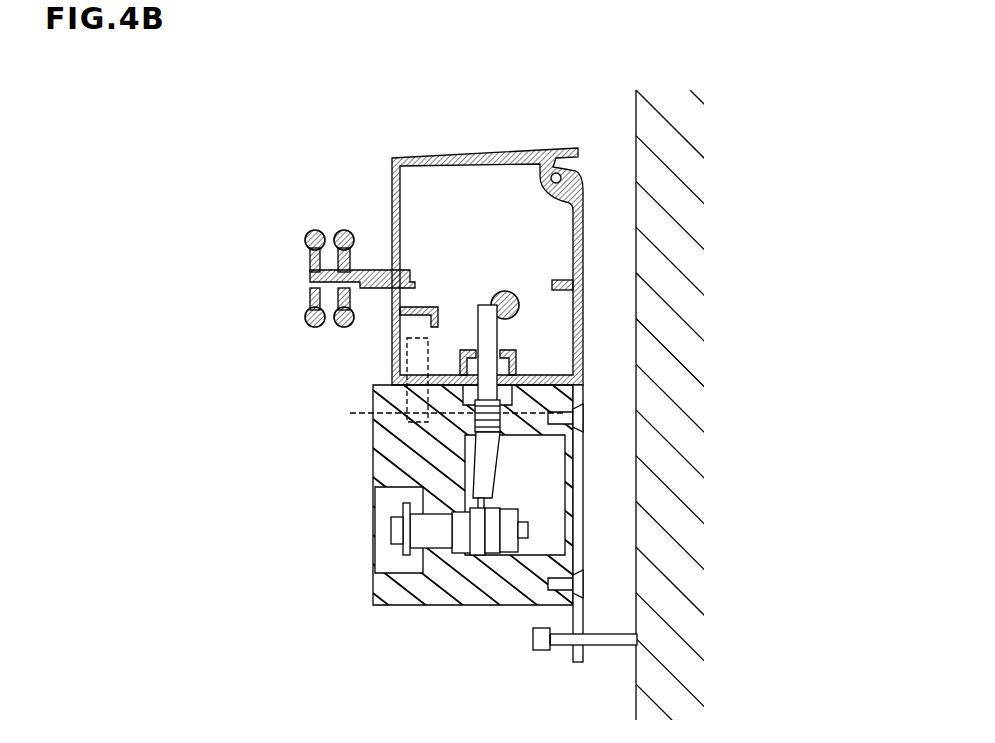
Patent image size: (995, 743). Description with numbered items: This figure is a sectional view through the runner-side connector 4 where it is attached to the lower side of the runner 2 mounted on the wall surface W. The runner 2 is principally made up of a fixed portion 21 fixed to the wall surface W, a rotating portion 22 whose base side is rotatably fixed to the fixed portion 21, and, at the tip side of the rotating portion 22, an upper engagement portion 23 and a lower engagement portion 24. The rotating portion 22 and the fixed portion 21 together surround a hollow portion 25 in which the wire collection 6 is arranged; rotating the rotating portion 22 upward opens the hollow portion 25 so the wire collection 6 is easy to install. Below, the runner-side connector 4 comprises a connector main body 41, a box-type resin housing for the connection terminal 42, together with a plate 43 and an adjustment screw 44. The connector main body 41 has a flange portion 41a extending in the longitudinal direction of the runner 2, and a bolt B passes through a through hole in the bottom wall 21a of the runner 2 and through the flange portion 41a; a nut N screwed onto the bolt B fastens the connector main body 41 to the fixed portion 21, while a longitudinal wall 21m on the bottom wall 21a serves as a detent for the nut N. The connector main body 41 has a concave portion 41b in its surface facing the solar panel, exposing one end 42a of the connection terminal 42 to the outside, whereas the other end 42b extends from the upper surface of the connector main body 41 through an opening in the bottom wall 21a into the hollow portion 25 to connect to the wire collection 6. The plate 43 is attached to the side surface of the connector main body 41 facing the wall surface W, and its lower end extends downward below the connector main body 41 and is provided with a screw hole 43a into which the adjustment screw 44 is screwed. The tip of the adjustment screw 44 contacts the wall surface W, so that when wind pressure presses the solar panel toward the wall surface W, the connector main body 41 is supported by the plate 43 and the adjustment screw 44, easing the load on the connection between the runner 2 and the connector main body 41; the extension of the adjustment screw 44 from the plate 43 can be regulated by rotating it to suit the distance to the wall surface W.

The runner 2 is at (491, 230).
The rotating portion 22 is at (486, 148).
The wall surface W is at (636, 105).
The hollow portion 25 is at (441, 214).
The other end of connection terminal 42b is at (486, 305).
The wire collection 6 is at (512, 293).
The fixed portion 21 is at (590, 248).
The lower engagement portion 24 is at (302, 238).
The longitudinal wall 21m is at (437, 363).
The upper engagement portion 23 is at (302, 318).
The bottom wall 21a is at (547, 375).
The nut N is at (405, 362).
The flange portion 41a is at (375, 413).
The bolt B is at (396, 418).
The runner-side connector 4 is at (462, 479).
The plate 43 is at (583, 498).
The one end of connection terminal 42a is at (400, 528).
The concave portion 41b is at (393, 569).
The connector main body 41 is at (432, 606).
The connection terminal 42 is at (466, 553).
The adjustment screw 44 is at (540, 652).
The screw hole 43a is at (586, 652).